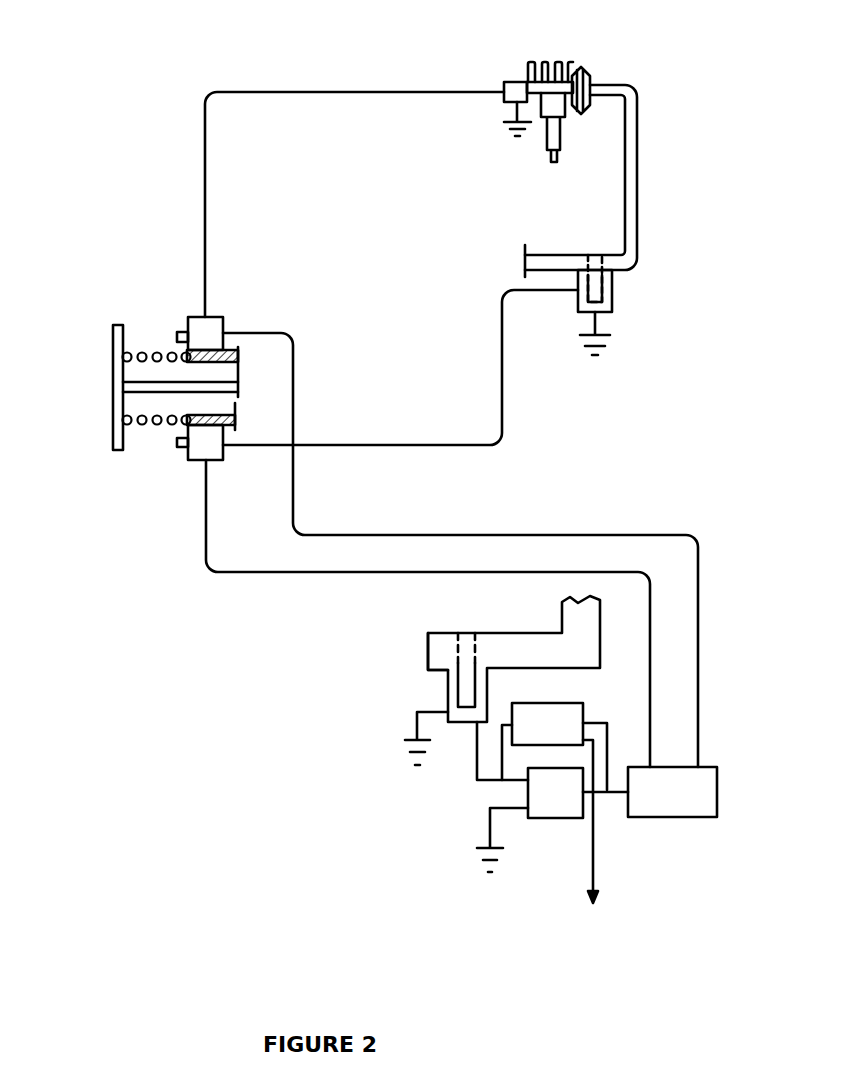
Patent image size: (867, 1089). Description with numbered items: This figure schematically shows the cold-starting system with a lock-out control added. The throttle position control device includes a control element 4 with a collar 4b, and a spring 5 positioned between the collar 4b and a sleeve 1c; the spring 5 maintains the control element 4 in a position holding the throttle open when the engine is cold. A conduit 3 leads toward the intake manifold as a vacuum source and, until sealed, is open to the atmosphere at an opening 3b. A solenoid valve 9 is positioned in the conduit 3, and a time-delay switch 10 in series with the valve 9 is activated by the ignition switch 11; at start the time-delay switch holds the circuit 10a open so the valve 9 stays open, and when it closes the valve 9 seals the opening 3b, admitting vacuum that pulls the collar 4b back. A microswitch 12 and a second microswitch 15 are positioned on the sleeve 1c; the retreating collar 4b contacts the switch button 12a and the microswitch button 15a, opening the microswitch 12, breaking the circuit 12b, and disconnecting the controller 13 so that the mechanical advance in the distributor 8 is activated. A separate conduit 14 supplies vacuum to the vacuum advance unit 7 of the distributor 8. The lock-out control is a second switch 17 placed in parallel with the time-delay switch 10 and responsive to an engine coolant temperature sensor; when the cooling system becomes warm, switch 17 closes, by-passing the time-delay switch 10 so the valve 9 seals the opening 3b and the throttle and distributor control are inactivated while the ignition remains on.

The sleeve 1c is at (225, 333).
The conduit 3 is at (513, 630).
The opening 3b is at (428, 650).
The control element 4 is at (222, 377).
The collar 4b is at (117, 325).
The spring 5 is at (147, 425).
The vacuum advance unit 7 is at (588, 70).
The distributor 8 is at (557, 62).
The valve 9 is at (488, 688).
The time-delay switch 10 is at (550, 818).
The circuit 10a is at (475, 765).
The ignition switch 11 is at (705, 765).
The microswitch 12 is at (207, 315).
The switch button 12a is at (177, 332).
The circuit 12b is at (368, 90).
The controller 13 is at (512, 82).
The separate conduit 14 is at (638, 128).
The second microswitch 15 is at (203, 462).
The microswitch button 15a is at (177, 445).
The second switch 17 is at (553, 703).